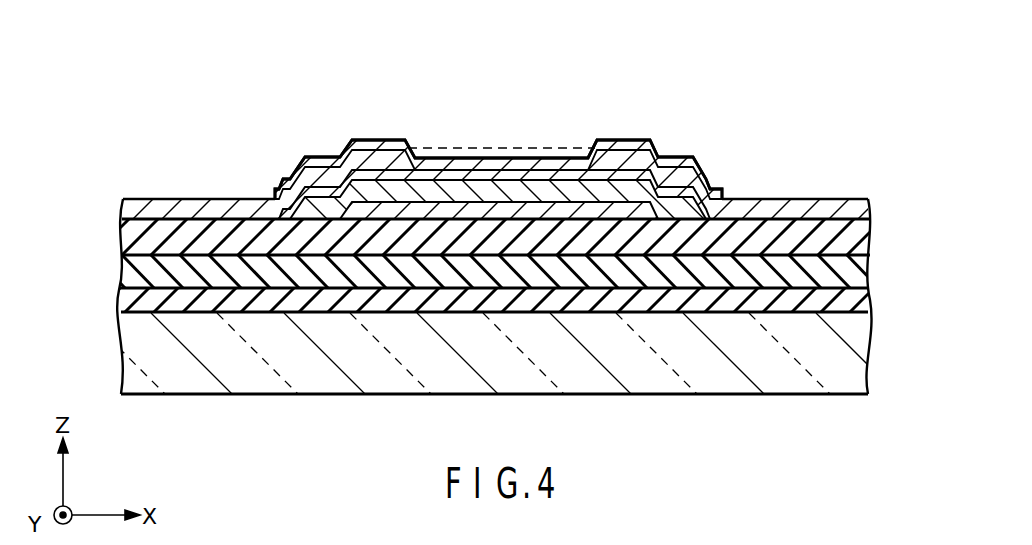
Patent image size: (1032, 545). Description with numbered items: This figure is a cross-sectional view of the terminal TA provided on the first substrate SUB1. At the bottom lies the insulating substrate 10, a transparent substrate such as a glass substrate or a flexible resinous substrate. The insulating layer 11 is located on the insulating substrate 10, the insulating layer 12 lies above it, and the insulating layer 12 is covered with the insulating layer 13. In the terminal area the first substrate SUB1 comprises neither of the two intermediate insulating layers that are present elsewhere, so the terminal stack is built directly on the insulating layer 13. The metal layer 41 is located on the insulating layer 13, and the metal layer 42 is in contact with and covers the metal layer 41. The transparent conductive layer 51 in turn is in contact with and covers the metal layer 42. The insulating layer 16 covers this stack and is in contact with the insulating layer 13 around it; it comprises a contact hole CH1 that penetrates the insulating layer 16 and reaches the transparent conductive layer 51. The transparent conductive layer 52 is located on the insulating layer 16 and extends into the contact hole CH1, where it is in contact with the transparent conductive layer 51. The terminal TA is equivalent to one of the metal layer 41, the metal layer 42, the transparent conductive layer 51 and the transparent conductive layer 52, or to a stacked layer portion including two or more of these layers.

The insulating substrate 10 is at (849, 352).
The insulating layer 11 is at (849, 300).
The insulating layer 12 is at (849, 275).
The insulating layer 13 is at (849, 243).
The insulating layer 16 is at (849, 212).
The metal layer 41 is at (440, 208).
The metal layer 42 is at (490, 193).
The transparent conductive layer 51 is at (540, 176).
The transparent conductive layer 52 is at (572, 162).
The terminal TA is at (498, 169).
The contact hole CH1 is at (423, 146).
The first substrate SUB1 is at (833, 168).